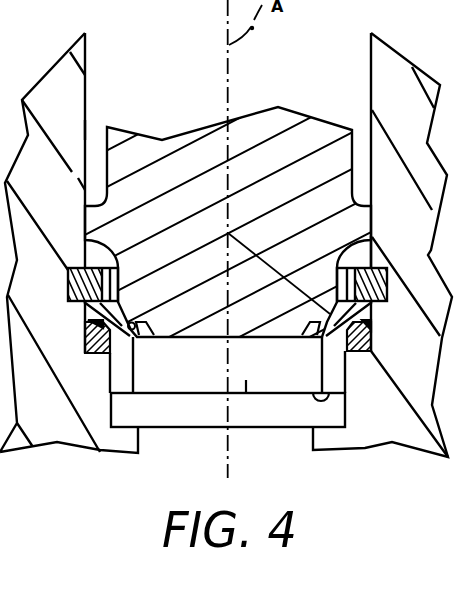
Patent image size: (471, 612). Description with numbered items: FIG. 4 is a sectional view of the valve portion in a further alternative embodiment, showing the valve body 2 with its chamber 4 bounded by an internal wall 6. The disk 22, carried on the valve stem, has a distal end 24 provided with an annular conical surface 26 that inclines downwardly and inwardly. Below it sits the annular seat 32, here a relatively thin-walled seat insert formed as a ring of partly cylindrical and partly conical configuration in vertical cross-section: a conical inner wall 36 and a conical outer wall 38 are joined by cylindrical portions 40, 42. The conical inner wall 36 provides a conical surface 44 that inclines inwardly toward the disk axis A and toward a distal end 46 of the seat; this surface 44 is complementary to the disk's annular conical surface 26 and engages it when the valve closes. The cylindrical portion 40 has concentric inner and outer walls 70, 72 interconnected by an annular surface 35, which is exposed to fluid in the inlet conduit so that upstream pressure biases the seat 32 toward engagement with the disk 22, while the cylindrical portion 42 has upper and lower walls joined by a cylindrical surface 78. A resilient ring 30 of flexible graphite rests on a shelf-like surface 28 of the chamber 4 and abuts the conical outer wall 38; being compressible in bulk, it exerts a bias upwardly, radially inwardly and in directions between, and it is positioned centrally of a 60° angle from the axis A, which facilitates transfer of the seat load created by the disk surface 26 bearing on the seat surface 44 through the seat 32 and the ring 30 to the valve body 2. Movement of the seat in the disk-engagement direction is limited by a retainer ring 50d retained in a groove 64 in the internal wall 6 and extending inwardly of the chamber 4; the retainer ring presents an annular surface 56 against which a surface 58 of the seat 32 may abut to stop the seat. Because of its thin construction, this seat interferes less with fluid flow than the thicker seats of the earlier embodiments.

The valve body 2 is at (371, 73).
The chamber 4 is at (86, 95).
The internal wall 6 is at (85, 127).
The disk 22 is at (213, 140).
The distal end 24 is at (215, 338).
The annular conical surface 26 is at (137, 340).
The shelf-like surface 28 is at (63, 375).
The resilient ring 30 is at (84, 335).
The annular seat 32 is at (136, 370).
The annular surface 35 is at (317, 396).
The conical inner wall 36 is at (300, 333).
The conical outer wall 38 is at (83, 330).
The cylindrical portion 40 is at (92, 372).
The cylindrical portion 42 is at (80, 309).
The conical surface 44 is at (128, 312).
The distal end 46 is at (204, 397).
The retainer ring 50d is at (373, 268).
The annular surface 56 is at (388, 300).
The surface 58 is at (68, 277).
The 60° angle 60 is at (281, 292).
The groove 64 is at (73, 268).
The inner wall 70 is at (150, 395).
The outer wall 72 is at (100, 388).
The cylindrical surface 78 is at (375, 325).